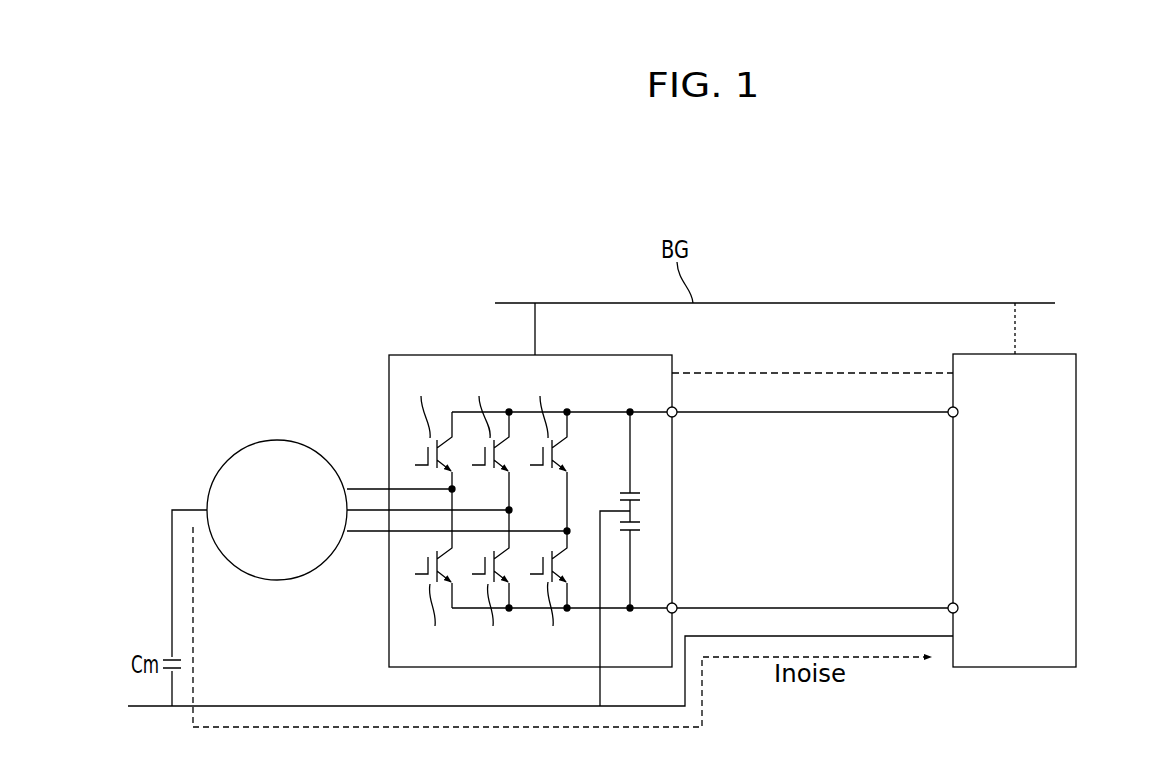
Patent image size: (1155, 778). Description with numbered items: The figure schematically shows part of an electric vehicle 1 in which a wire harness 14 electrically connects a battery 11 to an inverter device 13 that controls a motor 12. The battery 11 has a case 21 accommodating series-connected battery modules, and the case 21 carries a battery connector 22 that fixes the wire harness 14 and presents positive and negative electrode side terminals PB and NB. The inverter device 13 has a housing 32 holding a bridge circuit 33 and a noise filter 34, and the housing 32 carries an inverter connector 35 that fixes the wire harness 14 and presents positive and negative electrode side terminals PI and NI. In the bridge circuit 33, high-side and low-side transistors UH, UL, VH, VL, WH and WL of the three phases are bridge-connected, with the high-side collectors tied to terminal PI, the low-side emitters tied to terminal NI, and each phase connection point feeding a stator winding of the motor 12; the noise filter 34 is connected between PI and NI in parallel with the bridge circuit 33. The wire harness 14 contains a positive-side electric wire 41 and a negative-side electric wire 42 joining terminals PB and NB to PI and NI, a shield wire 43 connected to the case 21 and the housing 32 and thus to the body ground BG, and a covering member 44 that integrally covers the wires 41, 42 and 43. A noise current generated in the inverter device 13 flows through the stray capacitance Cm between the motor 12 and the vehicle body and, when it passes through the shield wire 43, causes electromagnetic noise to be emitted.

The electric vehicle 1 is at (1048, 226).
The battery 11 is at (1074, 351).
The motor 12 is at (258, 441).
The inverter device 13 is at (387, 353).
The wire harness 14 is at (766, 371).
The case 21 is at (1077, 378).
The battery connector 22 is at (950, 416).
The housing 32 is at (388, 403).
The bridge circuit 33 is at (450, 372).
The noise filter 34 is at (625, 485).
The inverter connector 35 is at (676, 416).
The positive-side electric wire 41 is at (845, 411).
The negative-side electric wire 42 is at (815, 607).
The shield wire 43 is at (770, 635).
The covering member 44 is at (907, 372).